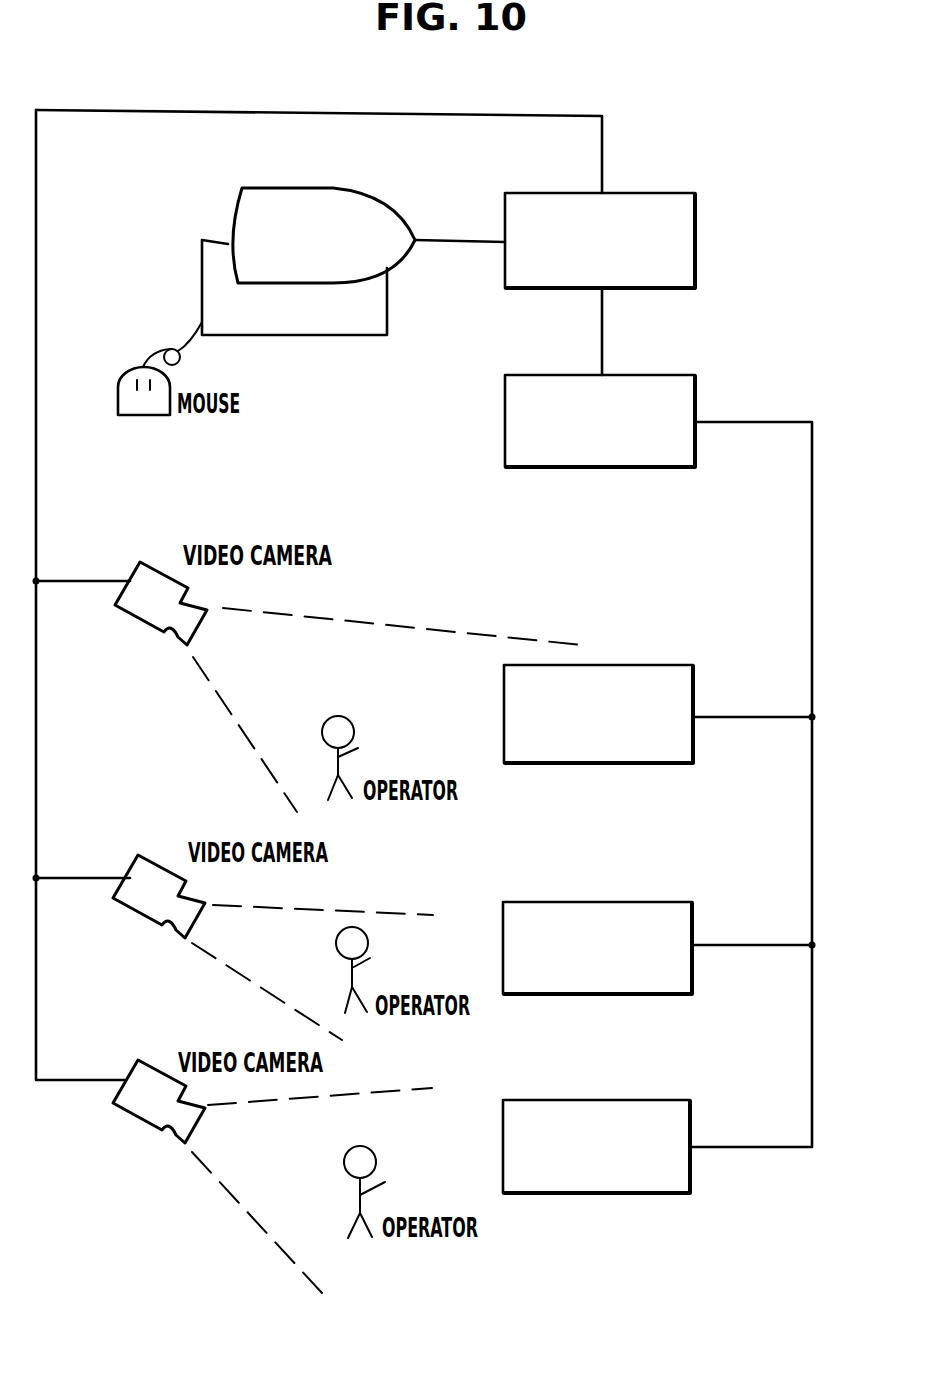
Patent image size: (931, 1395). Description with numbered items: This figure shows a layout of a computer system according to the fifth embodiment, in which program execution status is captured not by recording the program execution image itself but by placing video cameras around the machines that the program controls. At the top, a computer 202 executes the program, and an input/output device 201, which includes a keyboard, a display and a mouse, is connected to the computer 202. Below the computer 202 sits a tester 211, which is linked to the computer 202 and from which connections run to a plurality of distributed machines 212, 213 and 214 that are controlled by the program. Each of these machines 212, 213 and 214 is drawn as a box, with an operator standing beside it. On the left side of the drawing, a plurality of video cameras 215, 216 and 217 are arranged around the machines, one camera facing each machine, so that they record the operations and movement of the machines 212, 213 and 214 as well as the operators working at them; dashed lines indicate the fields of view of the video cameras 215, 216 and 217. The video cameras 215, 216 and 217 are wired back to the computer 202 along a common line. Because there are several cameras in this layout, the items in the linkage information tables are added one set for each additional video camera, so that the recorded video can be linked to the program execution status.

The input/output device 201 is at (232, 215).
The computer 202 is at (697, 241).
The tester 211 is at (697, 385).
The machine 212 is at (695, 677).
The machine 213 is at (694, 909).
The machine 214 is at (692, 1107).
The video camera 215 is at (140, 562).
The video camera 216 is at (138, 856).
The video camera 217 is at (121, 1114).